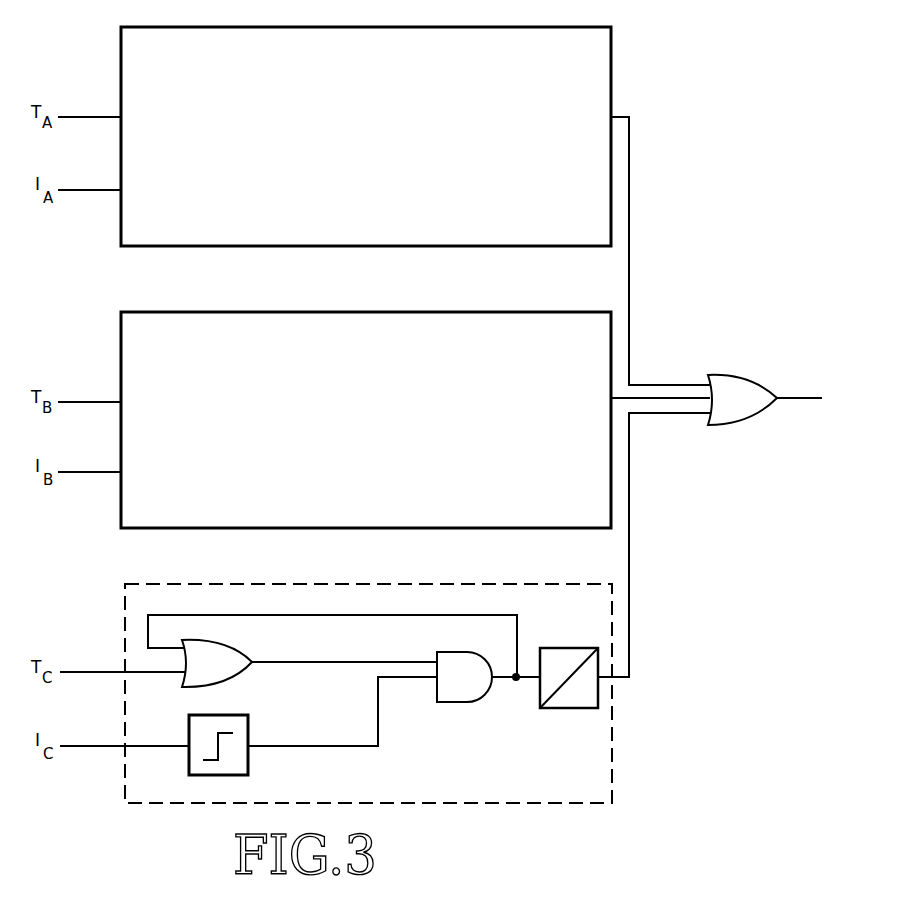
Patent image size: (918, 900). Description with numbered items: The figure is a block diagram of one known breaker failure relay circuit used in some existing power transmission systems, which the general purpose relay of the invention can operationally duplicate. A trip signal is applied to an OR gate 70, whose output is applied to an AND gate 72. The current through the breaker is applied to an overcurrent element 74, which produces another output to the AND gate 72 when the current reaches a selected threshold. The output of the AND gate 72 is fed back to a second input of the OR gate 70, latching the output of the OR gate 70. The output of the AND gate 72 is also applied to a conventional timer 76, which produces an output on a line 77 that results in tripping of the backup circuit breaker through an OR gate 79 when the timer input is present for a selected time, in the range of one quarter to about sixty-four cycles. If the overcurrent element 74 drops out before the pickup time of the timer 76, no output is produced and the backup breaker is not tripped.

The OR gate 70 is at (243, 652).
The AND gate 72 is at (466, 703).
The overcurrent element 74 is at (248, 722).
The timer 76 is at (565, 710).
The output line 77 is at (631, 527).
The OR gate 79 is at (740, 375).